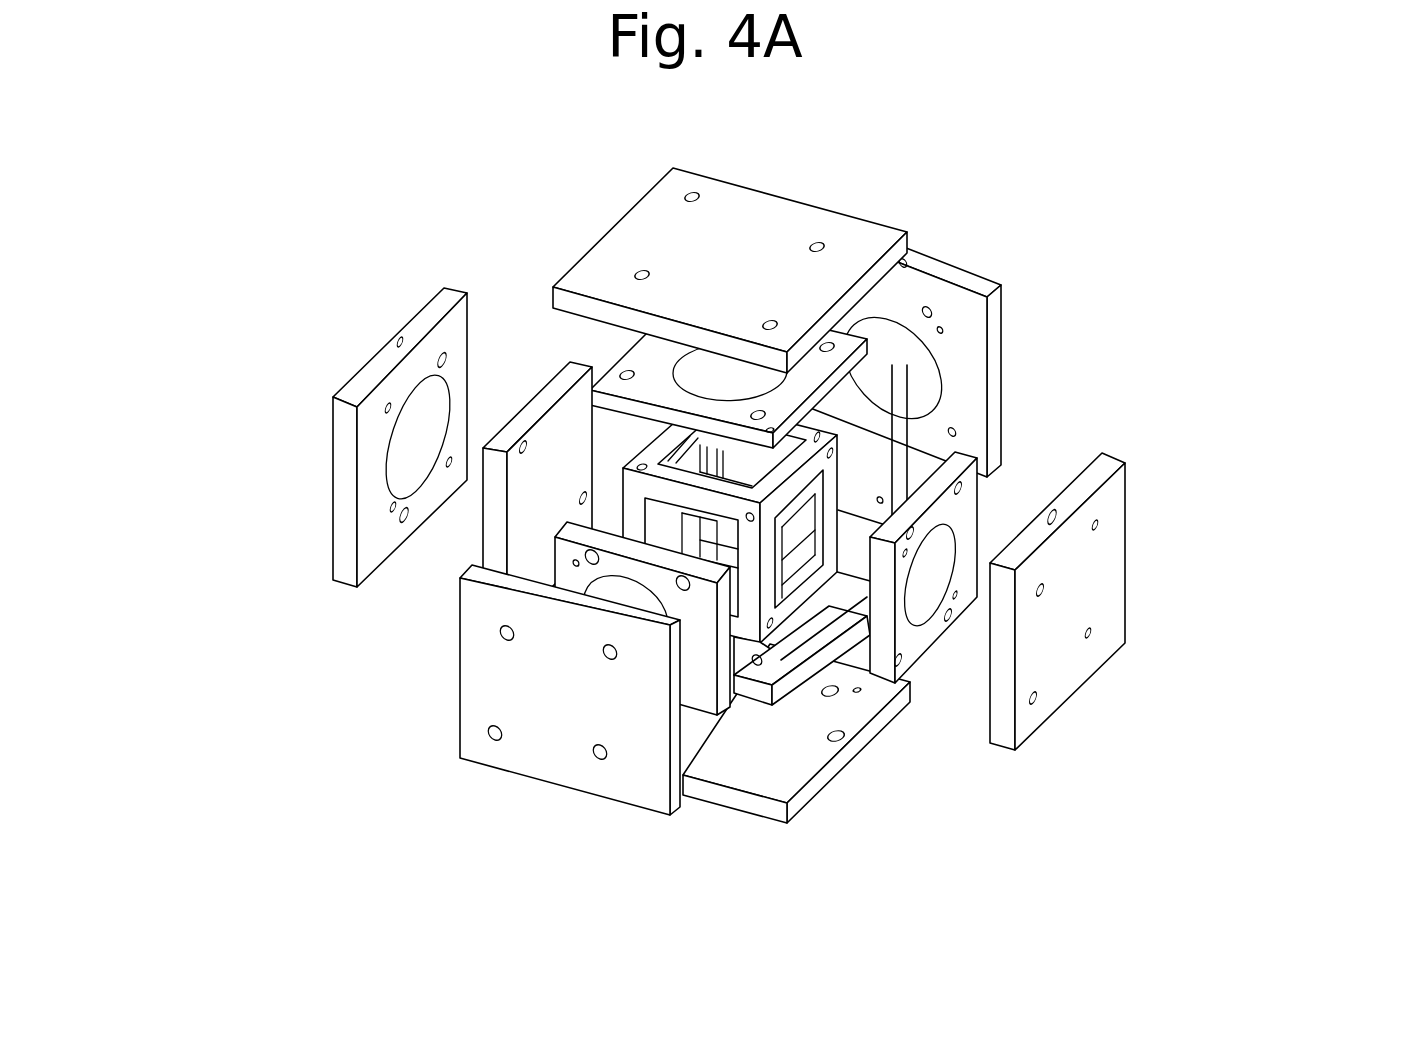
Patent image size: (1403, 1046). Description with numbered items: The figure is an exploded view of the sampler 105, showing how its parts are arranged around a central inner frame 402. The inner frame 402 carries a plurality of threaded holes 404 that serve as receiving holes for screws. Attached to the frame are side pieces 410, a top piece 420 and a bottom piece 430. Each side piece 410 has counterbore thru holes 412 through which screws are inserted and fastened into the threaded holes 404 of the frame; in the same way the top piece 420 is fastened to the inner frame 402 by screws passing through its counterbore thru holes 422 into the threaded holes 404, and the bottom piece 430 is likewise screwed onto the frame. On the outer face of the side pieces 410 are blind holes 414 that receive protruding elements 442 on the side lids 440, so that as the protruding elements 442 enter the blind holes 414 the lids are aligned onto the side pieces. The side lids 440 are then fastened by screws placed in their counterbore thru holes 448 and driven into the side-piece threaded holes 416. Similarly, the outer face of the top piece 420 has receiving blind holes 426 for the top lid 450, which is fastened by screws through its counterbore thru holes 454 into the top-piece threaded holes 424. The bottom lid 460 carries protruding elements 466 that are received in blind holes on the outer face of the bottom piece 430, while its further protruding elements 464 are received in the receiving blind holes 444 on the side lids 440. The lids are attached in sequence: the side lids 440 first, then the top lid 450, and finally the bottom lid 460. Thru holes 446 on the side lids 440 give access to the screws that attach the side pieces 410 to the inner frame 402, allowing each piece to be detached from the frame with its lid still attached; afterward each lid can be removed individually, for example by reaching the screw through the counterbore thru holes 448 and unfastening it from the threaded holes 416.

The sampler 105 is at (310, 190).
The inner frame 402 is at (624, 487).
The threaded holes 404 is at (770, 625).
The side pieces 410 is at (976, 500).
The counterbore thru holes 412 is at (897, 660).
The blind holes 414 is at (587, 562).
The threaded holes 416 is at (905, 557).
The top piece 420 is at (625, 373).
The counterbore thru holes 422 is at (827, 347).
The threaded holes 424 is at (773, 433).
The blind holes 426 is at (757, 410).
The bottom piece 430 is at (745, 700).
The side lids 440 is at (345, 517).
The protruding elements 442 is at (443, 355).
The receiving blind holes 444 is at (403, 338).
The thru holes 446 is at (1033, 702).
The counterbore thru holes 448 is at (1040, 593).
The top lid 450 is at (813, 218).
The counterbore thru holes 454 is at (688, 195).
The bottom lid 460 is at (802, 803).
The protruding elements 464 is at (835, 742).
The protruding elements 466 is at (830, 693).